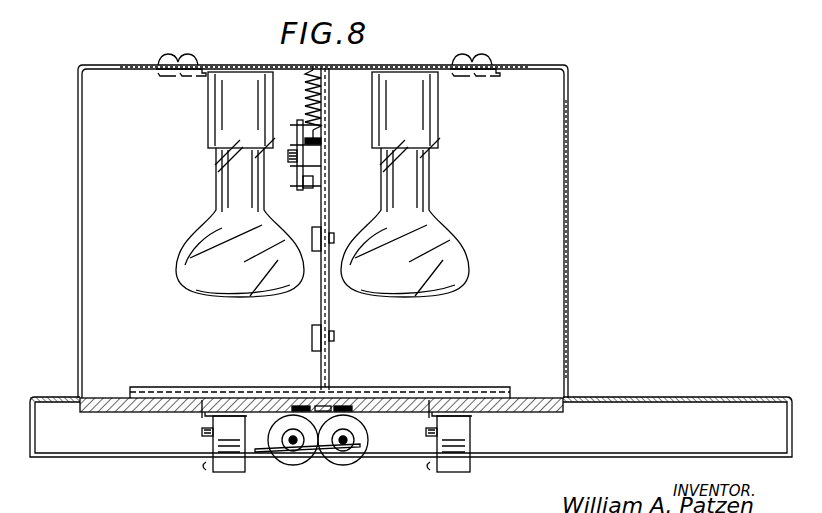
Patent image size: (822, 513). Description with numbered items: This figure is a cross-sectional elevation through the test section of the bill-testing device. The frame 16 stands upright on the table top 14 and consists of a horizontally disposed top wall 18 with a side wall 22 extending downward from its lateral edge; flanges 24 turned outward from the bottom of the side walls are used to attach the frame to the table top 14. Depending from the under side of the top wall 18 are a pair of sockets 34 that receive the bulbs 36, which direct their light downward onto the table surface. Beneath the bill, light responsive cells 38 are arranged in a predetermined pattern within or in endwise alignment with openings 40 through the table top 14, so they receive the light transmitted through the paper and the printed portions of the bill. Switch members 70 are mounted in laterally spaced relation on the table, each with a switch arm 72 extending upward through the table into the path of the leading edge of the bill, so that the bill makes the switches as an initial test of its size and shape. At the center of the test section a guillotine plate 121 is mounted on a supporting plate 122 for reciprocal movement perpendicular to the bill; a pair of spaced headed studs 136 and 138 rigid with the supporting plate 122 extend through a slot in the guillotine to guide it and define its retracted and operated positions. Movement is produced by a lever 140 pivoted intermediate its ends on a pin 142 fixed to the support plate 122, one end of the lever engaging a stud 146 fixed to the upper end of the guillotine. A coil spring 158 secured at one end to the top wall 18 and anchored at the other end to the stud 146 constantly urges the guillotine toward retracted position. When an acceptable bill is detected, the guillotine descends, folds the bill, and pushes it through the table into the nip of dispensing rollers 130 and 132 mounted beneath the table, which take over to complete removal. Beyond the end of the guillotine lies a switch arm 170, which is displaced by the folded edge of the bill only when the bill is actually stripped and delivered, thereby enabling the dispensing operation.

The table top 14 is at (700, 400).
The frame 16 is at (572, 90).
The top wall 18 is at (514, 66).
The side wall 22 is at (569, 166).
The flanges 24 is at (52, 397).
The sockets 34 is at (226, 101).
The bulbs 36 is at (222, 250).
The light responsive cells 38 is at (300, 396).
The openings 40 is at (340, 400).
The switch members 70 is at (226, 466).
The switch arm 72 is at (207, 398).
The guillotine plate 121 is at (320, 297).
The supporting plate 122 is at (330, 308).
The dispensing roller 130 is at (350, 458).
The dispensing roller 132 is at (285, 455).
The headed stud 136 is at (312, 240).
The headed stud 138 is at (312, 334).
The lever 140 is at (314, 182).
The pin 142 is at (312, 150).
The stud 146 is at (318, 122).
The coil spring 158 is at (322, 90).
The switch arm 170 is at (328, 452).